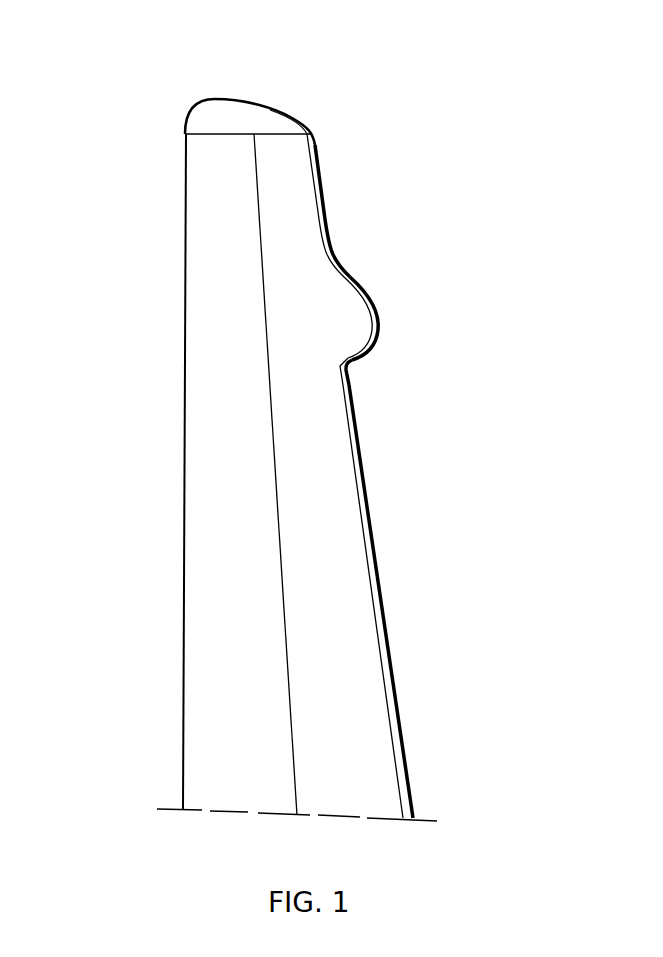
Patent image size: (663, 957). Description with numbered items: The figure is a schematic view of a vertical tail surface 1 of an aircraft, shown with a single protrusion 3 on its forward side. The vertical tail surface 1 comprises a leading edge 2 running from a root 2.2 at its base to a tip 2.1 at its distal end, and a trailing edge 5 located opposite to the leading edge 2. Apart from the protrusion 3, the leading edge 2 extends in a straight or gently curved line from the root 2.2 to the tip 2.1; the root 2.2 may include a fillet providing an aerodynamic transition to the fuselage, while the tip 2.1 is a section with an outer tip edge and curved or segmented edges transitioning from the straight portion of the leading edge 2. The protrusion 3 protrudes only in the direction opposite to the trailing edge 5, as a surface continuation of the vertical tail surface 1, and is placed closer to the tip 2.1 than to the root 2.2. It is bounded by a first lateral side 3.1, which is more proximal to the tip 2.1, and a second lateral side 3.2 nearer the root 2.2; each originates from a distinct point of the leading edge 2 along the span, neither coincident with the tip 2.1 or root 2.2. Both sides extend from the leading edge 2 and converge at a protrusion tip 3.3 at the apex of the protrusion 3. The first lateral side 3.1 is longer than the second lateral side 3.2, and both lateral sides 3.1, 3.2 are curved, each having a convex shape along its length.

The vertical tail surface 1 is at (138, 200).
The leading edge 2 is at (377, 527).
The tip 2.1 is at (242, 118).
The root 2.2 is at (347, 816).
The protrusion 3 is at (407, 278).
The first lateral side 3.1 is at (343, 270).
The second lateral side 3.2 is at (362, 360).
The protrusion tip 3.3 is at (380, 343).
The trailing edge 5 is at (183, 398).